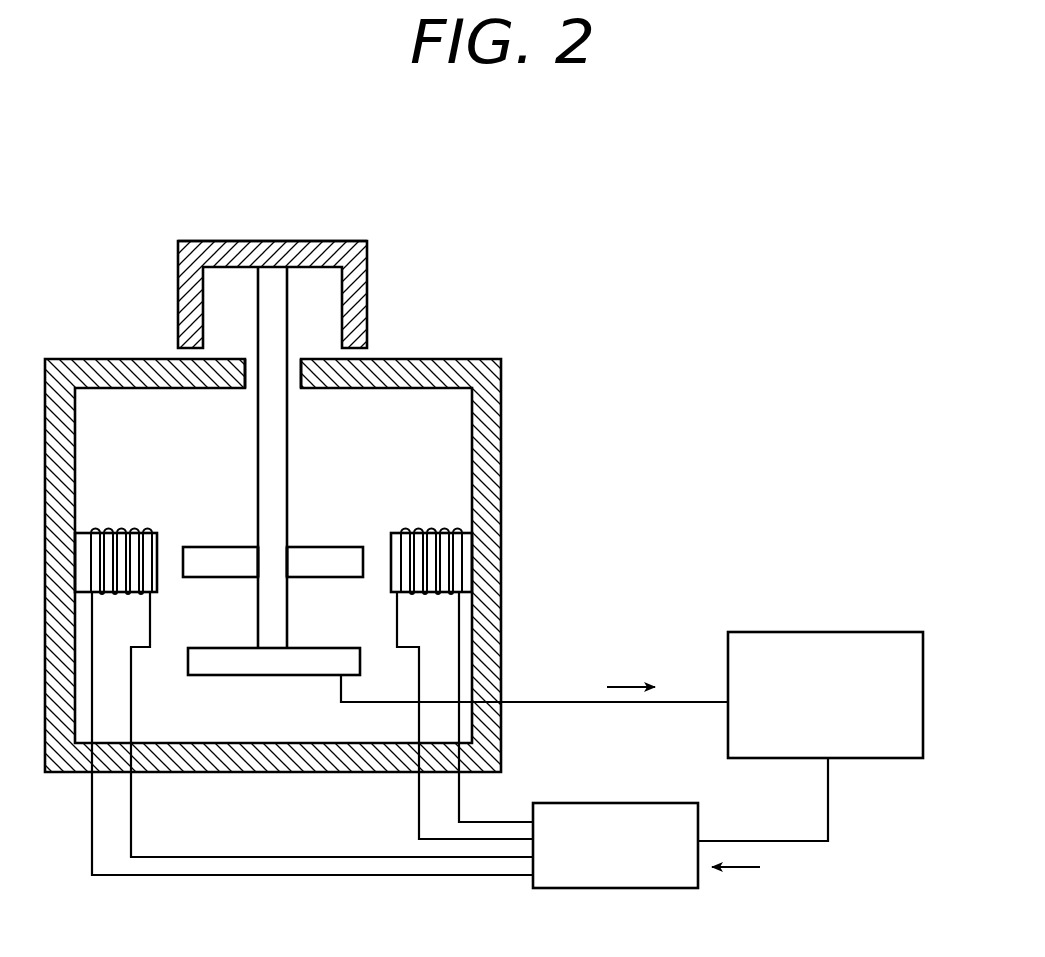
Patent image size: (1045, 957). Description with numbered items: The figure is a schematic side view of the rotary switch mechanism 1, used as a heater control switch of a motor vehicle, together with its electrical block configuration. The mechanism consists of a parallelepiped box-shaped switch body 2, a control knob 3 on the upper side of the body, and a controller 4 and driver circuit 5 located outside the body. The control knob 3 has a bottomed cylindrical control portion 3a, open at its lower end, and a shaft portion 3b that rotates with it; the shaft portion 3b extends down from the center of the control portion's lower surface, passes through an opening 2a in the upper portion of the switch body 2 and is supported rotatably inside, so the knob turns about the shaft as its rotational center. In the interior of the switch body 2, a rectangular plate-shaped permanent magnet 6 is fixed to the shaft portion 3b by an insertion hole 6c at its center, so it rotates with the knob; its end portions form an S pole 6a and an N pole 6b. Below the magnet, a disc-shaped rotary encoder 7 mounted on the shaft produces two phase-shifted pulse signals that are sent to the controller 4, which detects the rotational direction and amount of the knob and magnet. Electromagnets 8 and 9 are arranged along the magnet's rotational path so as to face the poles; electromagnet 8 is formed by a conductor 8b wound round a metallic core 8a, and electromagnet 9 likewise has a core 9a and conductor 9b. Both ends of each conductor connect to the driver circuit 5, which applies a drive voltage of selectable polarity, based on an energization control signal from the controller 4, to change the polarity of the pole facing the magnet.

The rotary switch mechanism 1 is at (564, 308).
The switch body 2 is at (501, 440).
The opening 2a is at (250, 388).
The control knob 3 is at (385, 251).
The control portion 3a is at (216, 241).
The shaft portion 3b is at (287, 430).
The controller 4 is at (898, 632).
The driver circuit 5 is at (648, 803).
The permanent magnet 6 is at (277, 561).
The S pole 6a is at (183, 547).
The N pole 6b is at (367, 547).
The insertion hole 6c is at (284, 541).
The rotary encoder 7 is at (224, 676).
The electromagnet 8 is at (139, 519).
The metallic core 8a is at (158, 565).
The conductor 8b is at (131, 530).
The electromagnet 9 is at (415, 523).
The metallic core 9a is at (390, 567).
The conductor 9b is at (440, 530).